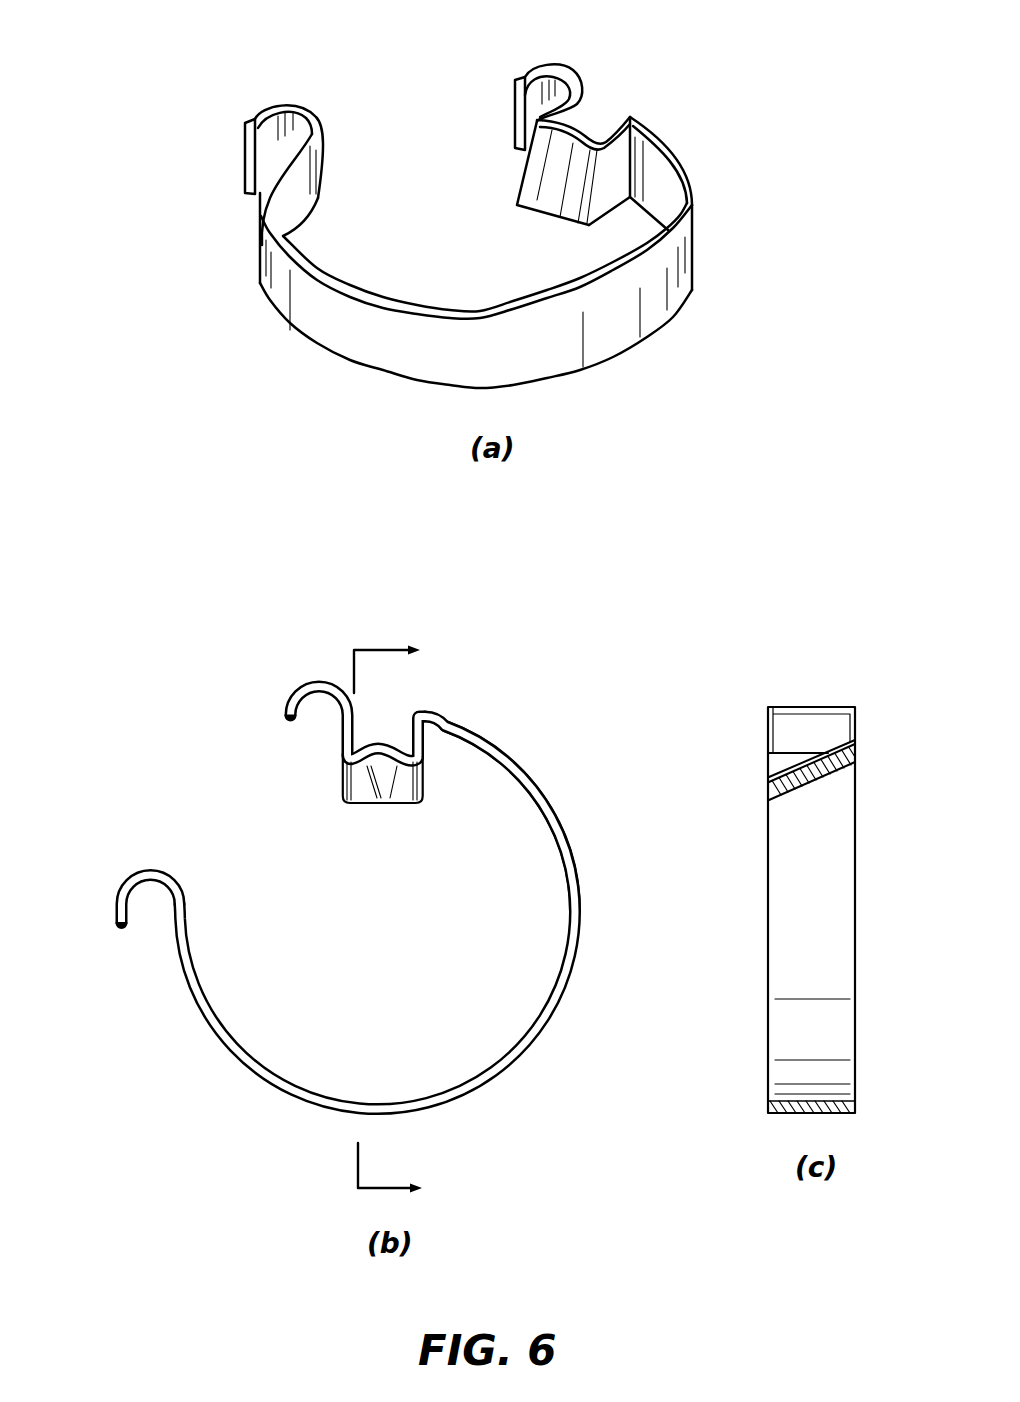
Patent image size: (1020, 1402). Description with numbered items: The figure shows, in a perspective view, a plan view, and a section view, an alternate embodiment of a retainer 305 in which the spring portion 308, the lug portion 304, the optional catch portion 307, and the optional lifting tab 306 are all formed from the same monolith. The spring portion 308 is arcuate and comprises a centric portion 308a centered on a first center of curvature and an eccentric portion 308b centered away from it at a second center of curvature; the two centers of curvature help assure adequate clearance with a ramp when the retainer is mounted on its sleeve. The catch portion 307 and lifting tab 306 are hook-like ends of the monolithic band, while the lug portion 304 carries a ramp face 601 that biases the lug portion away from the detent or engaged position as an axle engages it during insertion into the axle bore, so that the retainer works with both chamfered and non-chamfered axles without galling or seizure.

The lug portion 304 is at (605, 236).
The retainer 305 is at (397, 616).
The lifting tab 306 is at (535, 52).
The catch portion 307 is at (306, 92).
The spring portion 308 is at (777, 1072).
The centric portion 308a is at (270, 1088).
The eccentric portion 308b is at (571, 806).
The ramp face 601 is at (540, 163).